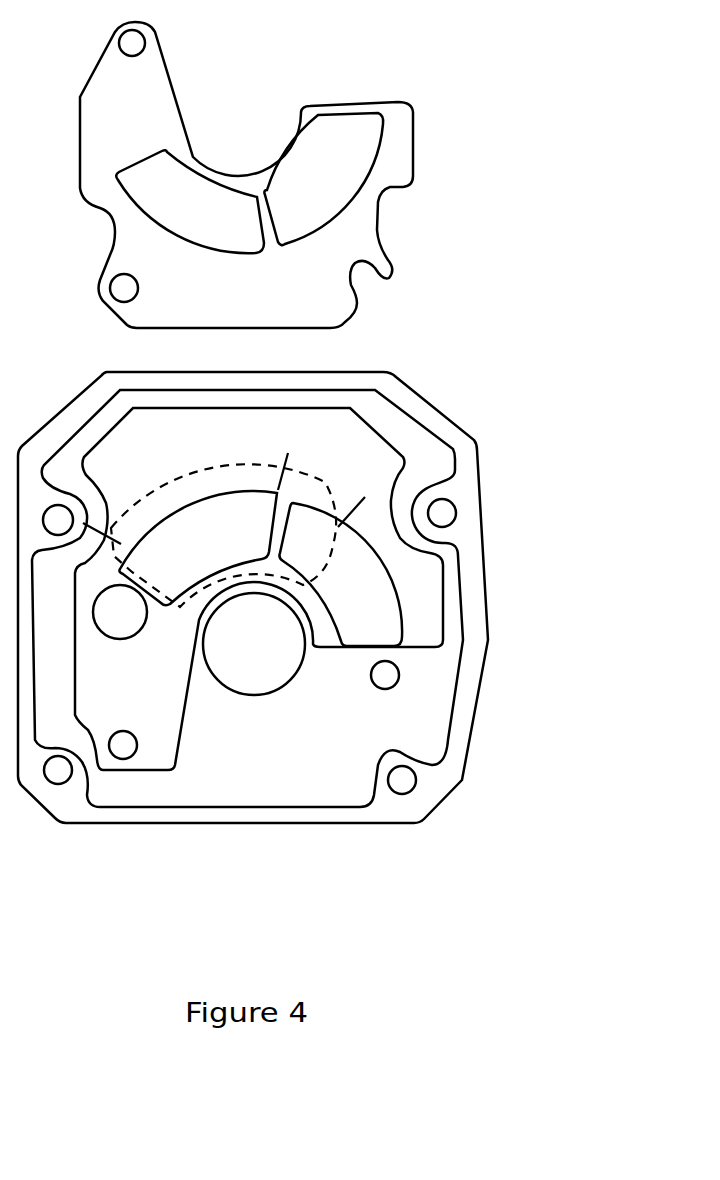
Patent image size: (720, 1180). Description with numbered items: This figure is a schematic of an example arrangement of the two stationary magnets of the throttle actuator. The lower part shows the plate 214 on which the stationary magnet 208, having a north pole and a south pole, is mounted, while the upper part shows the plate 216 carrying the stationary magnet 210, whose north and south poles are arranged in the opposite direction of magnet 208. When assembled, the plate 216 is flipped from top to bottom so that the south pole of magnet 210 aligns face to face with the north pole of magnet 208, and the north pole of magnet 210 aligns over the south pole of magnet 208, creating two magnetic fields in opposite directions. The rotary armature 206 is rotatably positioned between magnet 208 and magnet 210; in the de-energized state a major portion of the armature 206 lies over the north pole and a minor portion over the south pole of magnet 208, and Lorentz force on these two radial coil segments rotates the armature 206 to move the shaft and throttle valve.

The rotary armature 206 is at (303, 473).
The stationary magnet 208 is at (397, 633).
The stationary magnet 210 is at (297, 205).
The plate 214 is at (444, 742).
The plate 216 is at (400, 232).